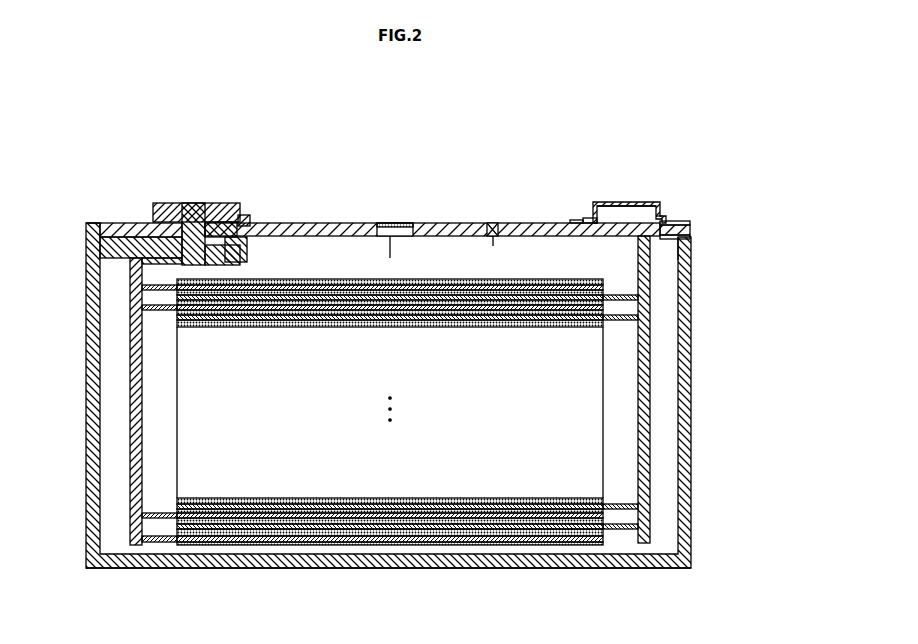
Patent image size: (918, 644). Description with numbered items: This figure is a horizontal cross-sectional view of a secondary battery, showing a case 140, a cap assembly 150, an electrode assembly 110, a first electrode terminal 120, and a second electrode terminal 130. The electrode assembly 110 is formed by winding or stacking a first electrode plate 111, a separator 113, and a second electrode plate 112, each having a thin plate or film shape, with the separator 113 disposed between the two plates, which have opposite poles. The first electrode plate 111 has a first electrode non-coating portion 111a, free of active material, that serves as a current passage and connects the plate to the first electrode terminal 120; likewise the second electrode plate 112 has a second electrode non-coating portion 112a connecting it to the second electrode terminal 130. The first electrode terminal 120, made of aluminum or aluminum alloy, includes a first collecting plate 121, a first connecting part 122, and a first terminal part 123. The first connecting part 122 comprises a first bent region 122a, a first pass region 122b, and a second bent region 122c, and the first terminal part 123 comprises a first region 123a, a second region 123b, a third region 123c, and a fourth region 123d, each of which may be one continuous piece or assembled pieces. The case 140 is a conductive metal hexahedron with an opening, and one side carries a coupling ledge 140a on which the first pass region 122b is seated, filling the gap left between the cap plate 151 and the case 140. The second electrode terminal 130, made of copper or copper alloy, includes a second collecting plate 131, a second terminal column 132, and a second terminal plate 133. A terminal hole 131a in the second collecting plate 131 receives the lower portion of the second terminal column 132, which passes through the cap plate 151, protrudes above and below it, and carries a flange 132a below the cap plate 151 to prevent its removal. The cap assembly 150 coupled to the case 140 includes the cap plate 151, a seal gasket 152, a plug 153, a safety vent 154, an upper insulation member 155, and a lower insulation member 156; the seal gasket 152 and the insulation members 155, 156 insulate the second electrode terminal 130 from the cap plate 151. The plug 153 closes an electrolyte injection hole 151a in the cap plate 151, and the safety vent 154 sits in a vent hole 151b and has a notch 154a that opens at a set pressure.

The electrode assembly 110 is at (390, 449).
The first electrode plate 111 is at (535, 545).
The first electrode non-coating portion 111a is at (622, 530).
The second electrode plate 112 is at (279, 545).
The second electrode non-coating portion 112a is at (158, 542).
The separator 113 is at (403, 545).
The first electrode terminal 120 is at (680, 315).
The first collecting plate 121 is at (650, 328).
The first connecting part 122 is at (725, 234).
The first bent region 122a is at (680, 243).
The first pass region 122b is at (690, 229).
The second bent region 122c is at (680, 222).
The first terminal part 123 is at (632, 169).
The first region 123a is at (662, 213).
The second region 123b is at (638, 204).
The third region 123c is at (590, 219).
The fourth region 123d is at (584, 195).
The second electrode terminal 130 is at (170, 202).
The second collecting plate 131 is at (165, 232).
The terminal hole 131a is at (185, 264).
The second terminal column 132 is at (190, 210).
The flange 132a is at (247, 263).
The second terminal plate 133 is at (133, 162).
The case 140 is at (690, 377).
The coupling ledge 140a is at (690, 272).
The cap assembly 150 is at (455, 150).
The cap plate 151 is at (452, 222).
The electrolyte injection hole 151a is at (492, 238).
The vent hole 151b is at (387, 258).
The seal gasket 152 is at (240, 232).
The plug 153 is at (492, 222).
The safety vent 154 is at (393, 206).
The notch 154a is at (412, 222).
The upper insulation member 155 is at (245, 220).
The lower insulation member 156 is at (100, 254).